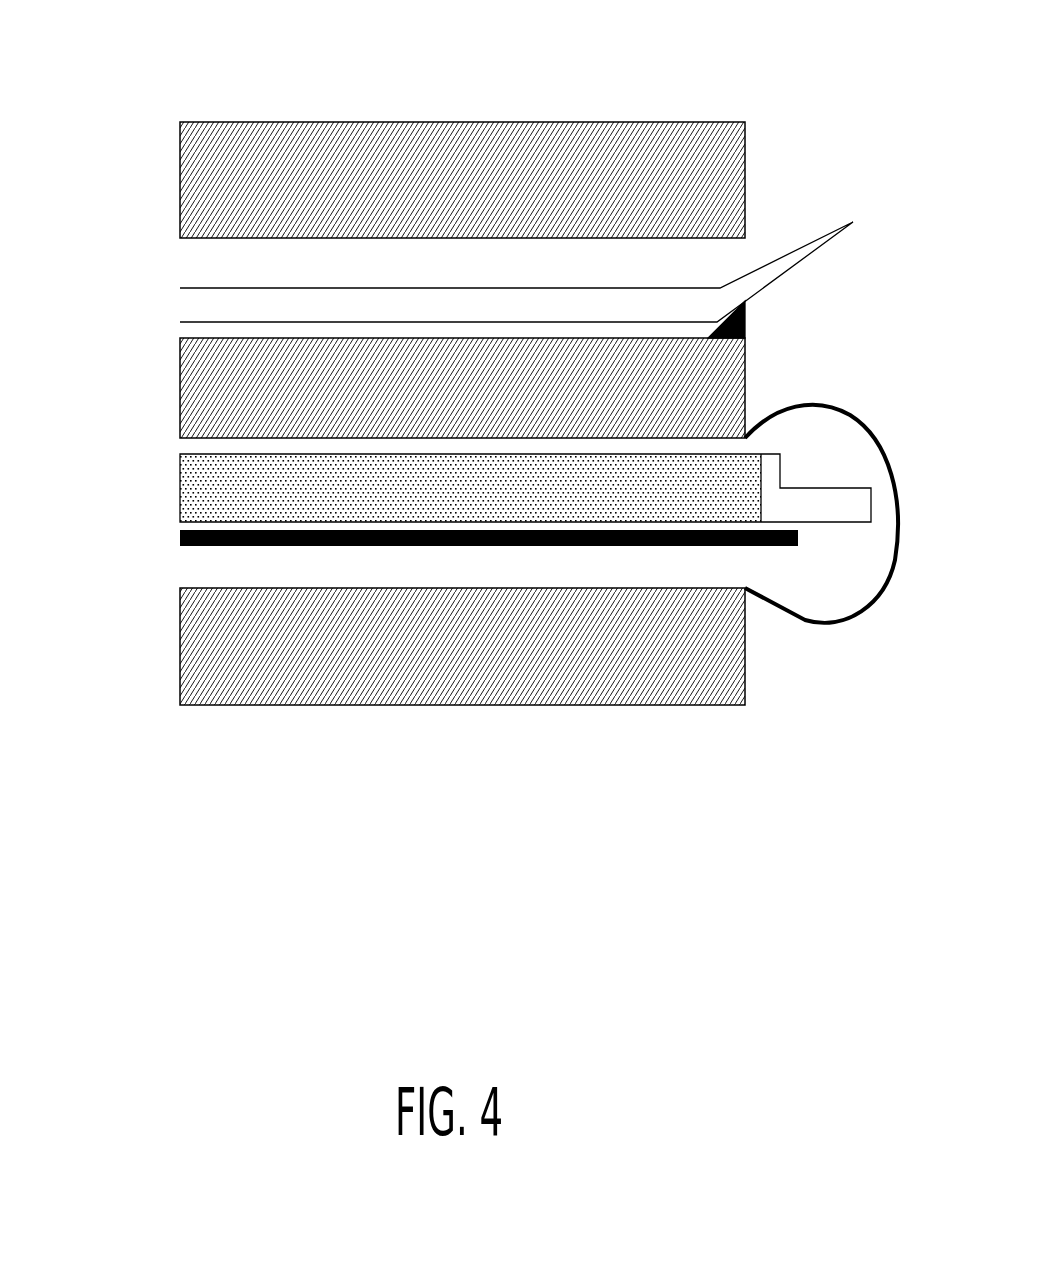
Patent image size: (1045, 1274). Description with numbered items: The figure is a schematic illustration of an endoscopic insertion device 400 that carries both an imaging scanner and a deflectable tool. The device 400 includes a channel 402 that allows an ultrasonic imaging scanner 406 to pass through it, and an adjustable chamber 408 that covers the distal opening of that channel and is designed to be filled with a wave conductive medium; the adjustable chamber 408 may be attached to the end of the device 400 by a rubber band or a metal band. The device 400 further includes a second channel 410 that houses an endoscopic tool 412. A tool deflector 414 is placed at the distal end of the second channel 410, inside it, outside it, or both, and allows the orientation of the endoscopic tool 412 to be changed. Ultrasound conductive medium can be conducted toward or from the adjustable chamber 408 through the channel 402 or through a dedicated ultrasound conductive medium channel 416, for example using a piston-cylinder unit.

The device 400 is at (487, 456).
The channel 402 is at (468, 667).
The ultrasonic imaging scanner 406 is at (853, 546).
The adjustable chamber 408 is at (798, 648).
The second channel 410 is at (487, 169).
The endoscopic tool 412 is at (798, 214).
The tool deflector 414 is at (770, 319).
The ultrasound conductive medium channel 416 is at (771, 561).